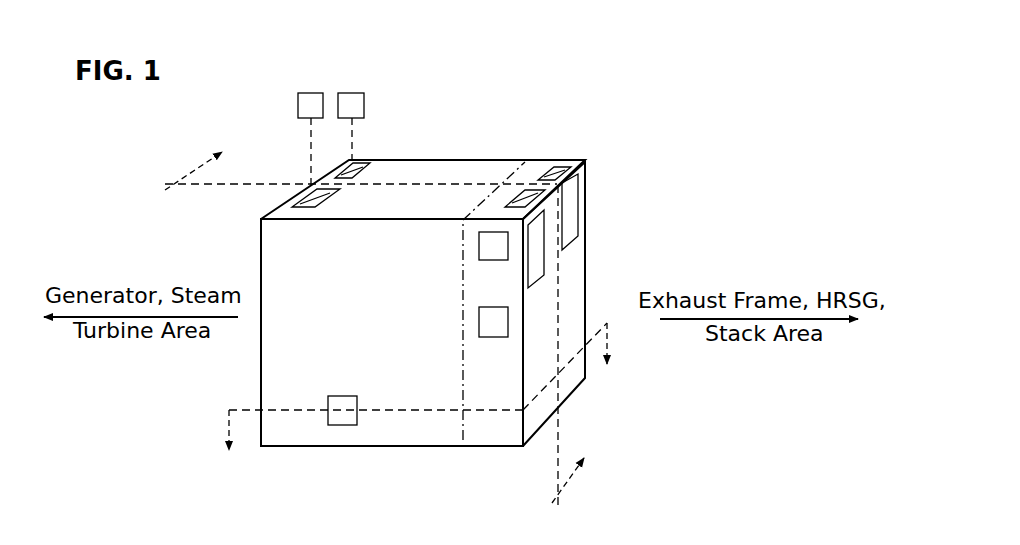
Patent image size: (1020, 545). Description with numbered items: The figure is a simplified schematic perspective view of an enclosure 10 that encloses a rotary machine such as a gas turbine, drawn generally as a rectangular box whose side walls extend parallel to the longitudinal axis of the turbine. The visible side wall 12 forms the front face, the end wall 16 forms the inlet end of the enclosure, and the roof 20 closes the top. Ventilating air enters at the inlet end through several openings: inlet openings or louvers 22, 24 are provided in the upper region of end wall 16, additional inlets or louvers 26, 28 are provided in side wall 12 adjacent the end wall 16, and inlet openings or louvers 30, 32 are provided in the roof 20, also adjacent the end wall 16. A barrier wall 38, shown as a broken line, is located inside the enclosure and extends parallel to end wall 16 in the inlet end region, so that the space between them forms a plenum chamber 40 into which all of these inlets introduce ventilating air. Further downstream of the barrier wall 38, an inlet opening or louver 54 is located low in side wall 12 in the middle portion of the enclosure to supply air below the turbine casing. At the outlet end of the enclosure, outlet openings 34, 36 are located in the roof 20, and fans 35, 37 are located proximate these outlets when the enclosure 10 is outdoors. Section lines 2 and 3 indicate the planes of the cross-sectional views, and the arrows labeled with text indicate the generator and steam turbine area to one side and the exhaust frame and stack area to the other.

The enclosure 10 is at (483, 129).
The side wall 12 is at (261, 336).
The end wall 16 is at (572, 284).
The roof 20 is at (502, 171).
The inlet opening or louver 22 is at (537, 268).
The inlet opening or louver 24 is at (568, 208).
The inlet or louver 26 is at (484, 243).
The inlet or louver 28 is at (484, 317).
The inlet opening or louver 30 is at (512, 200).
The inlet opening or louver 32 is at (556, 166).
The outlet opening 34 is at (322, 200).
The outlet opening 36 is at (352, 170).
The fan 35 is at (305, 92).
The fan 37 is at (344, 92).
The barrier wall 38 is at (462, 397).
The plenum chamber 40 is at (492, 380).
The inlet opening or louver 54 is at (338, 402).
The section line 2- 2 is at (379, 319).
The section line 3- 3 is at (417, 408).